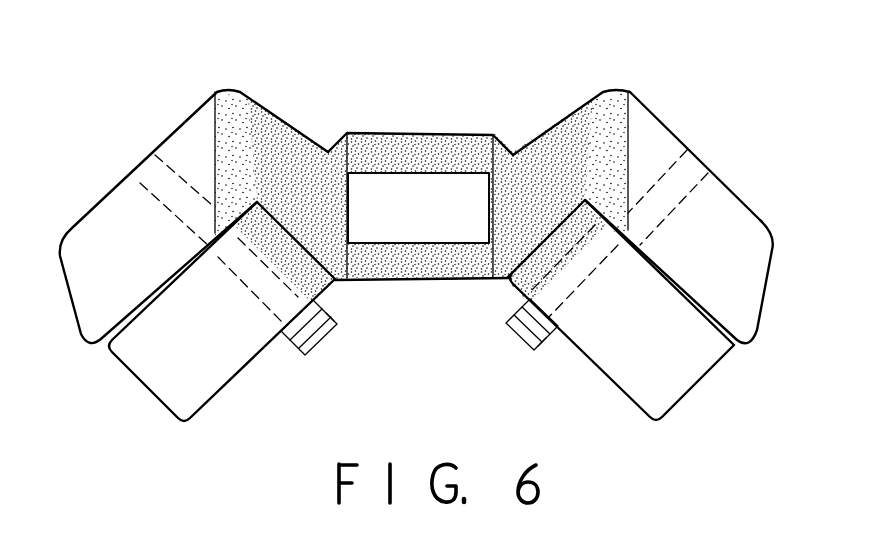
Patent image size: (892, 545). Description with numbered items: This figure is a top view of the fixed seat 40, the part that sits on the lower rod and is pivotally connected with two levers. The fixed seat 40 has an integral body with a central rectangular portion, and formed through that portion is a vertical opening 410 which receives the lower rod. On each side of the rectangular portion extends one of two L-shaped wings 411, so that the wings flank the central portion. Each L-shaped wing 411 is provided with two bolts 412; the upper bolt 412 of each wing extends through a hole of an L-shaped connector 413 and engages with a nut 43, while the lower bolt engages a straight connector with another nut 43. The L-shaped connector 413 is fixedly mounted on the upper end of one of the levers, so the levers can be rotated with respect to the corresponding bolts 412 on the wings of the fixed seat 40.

The fixed seat 40 is at (539, 108).
The vertical opening 410 is at (415, 132).
The L-shaped wing 411 is at (211, 94).
The bolt 412 is at (670, 167).
The L-shaped connector 413 is at (232, 377).
The nut 43 is at (548, 340).